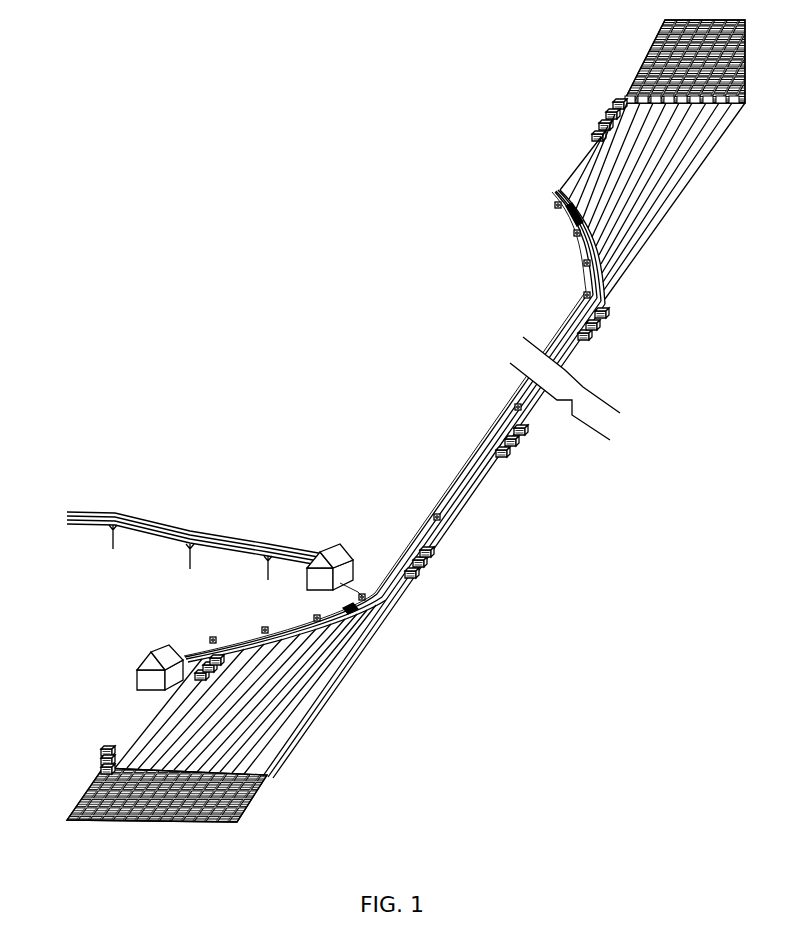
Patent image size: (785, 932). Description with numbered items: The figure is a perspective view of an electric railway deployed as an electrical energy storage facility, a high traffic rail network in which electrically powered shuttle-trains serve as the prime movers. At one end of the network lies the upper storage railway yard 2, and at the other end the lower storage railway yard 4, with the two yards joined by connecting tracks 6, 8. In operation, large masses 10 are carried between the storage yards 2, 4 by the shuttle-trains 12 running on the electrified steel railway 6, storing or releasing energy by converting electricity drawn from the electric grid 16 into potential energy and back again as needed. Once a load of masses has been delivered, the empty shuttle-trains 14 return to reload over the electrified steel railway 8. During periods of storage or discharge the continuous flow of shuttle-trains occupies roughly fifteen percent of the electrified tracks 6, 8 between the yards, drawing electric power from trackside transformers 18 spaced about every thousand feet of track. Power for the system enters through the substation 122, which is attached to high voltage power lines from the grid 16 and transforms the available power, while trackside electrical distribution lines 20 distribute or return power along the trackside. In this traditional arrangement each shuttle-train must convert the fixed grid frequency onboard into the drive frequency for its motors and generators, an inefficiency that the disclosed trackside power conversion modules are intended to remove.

The upper storage railway yard 2 is at (603, 153).
The lower storage railway yard 4 is at (283, 723).
The connecting track 6 is at (477, 502).
The connecting track 8 is at (473, 472).
The large masses 10 is at (252, 803).
The shuttle-trains 12 is at (430, 567).
The empty shuttle-trains 14 is at (570, 220).
The electric grid 16 is at (227, 537).
The trackside transformers 18 is at (580, 297).
The trackside electrical distribution lines 20 is at (425, 527).
The substation 122 is at (340, 557).